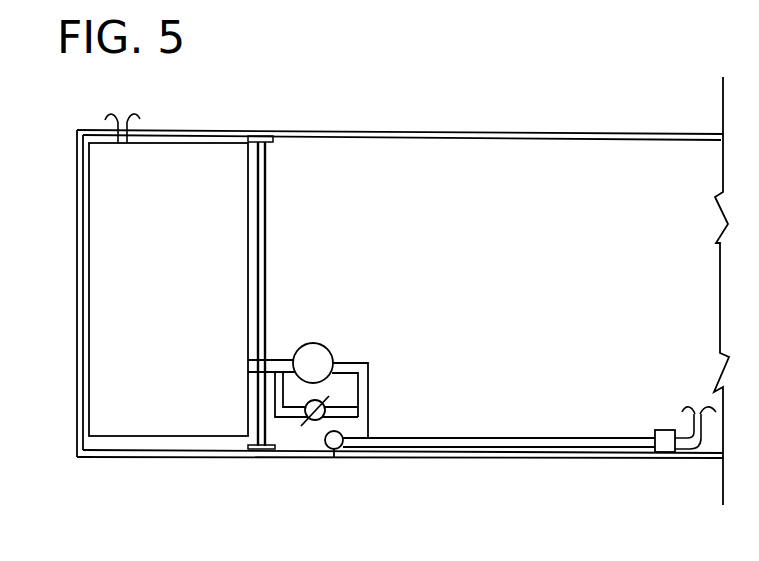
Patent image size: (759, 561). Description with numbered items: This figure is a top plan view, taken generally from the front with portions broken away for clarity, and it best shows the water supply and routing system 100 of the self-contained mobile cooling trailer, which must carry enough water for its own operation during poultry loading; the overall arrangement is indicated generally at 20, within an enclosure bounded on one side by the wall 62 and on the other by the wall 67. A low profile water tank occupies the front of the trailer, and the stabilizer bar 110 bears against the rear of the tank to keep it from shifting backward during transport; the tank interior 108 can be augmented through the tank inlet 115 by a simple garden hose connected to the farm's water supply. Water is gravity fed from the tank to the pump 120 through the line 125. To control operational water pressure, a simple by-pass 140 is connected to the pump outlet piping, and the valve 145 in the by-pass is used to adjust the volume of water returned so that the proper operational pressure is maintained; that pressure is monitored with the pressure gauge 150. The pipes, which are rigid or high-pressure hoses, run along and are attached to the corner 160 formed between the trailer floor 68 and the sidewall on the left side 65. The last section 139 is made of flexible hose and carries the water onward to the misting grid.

The aircraft lavatory / galley system 20 is at (490, 68).
The water supply and routing system 100 is at (276, 110).
The side wall of enclosure 62 is at (77, 226).
The trailer floor 68 is at (585, 158).
The cabin wall 67 is at (671, 131).
The left side sidewall 65 is at (697, 458).
The tank inlet 115 is at (135, 127).
The fluid reservoir tank 108 is at (228, 240).
The stabilizer bar 110 is at (267, 193).
The line 125 is at (274, 360).
The pump 120 is at (316, 346).
The valve 145 is at (323, 394).
The by-pass 140 is at (283, 418).
The pressure gauge 150 is at (334, 458).
The corner 160 is at (448, 437).
The last section 139 is at (682, 430).